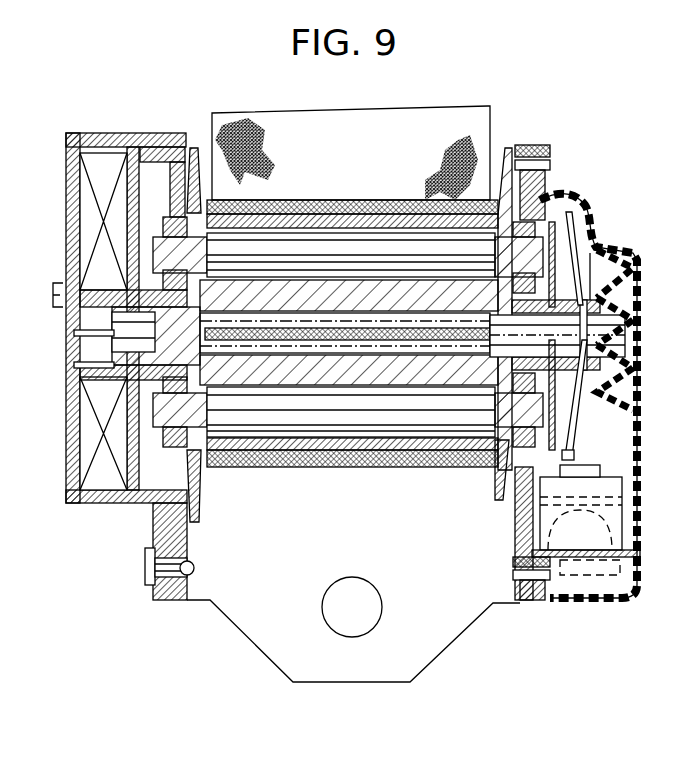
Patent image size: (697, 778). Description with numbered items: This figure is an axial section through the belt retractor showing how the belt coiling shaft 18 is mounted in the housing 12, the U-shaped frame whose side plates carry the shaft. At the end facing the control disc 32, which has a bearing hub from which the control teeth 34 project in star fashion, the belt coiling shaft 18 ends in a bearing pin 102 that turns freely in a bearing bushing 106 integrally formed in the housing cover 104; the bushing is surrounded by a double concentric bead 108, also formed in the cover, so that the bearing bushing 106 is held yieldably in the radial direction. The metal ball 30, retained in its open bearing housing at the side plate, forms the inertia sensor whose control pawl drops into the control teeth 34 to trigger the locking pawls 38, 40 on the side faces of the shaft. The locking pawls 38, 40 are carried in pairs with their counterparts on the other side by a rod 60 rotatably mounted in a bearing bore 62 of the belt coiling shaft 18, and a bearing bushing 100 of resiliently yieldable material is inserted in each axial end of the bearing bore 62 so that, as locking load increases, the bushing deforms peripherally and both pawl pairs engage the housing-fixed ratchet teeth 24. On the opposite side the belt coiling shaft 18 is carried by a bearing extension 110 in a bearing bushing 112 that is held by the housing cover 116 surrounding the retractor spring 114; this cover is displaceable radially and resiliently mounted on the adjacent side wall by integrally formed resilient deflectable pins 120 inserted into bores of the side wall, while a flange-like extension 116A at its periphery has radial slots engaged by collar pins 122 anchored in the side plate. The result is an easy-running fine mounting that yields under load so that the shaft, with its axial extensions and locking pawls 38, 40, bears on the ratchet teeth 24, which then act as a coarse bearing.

The housing 12 is at (430, 655).
The belt coiling shaft 18 is at (290, 373).
The ratchet teeth 24 is at (532, 205).
The metal ball 30 is at (632, 525).
The control disc 32 is at (568, 415).
The control teeth 34 is at (505, 168).
The locking pawl 38 is at (574, 457).
The locking pawl 40 is at (572, 207).
The rod 60 is at (290, 247).
The bearing bore 62 is at (345, 233).
The bearing bushing 100 is at (462, 190).
The bearing pin 102 is at (635, 335).
The housing cover 104 is at (592, 242).
The bearing bushing 106 is at (623, 357).
The double concentric bead 108 is at (640, 298).
The bearing extension 110 is at (78, 333).
The bearing bushing 112 is at (78, 368).
The retractor spring 114 is at (100, 172).
The housing cover 116 is at (68, 165).
The flange-like extension 116A is at (160, 600).
The resilient deflectable pins 120 is at (158, 165).
The screw 122 is at (147, 570).